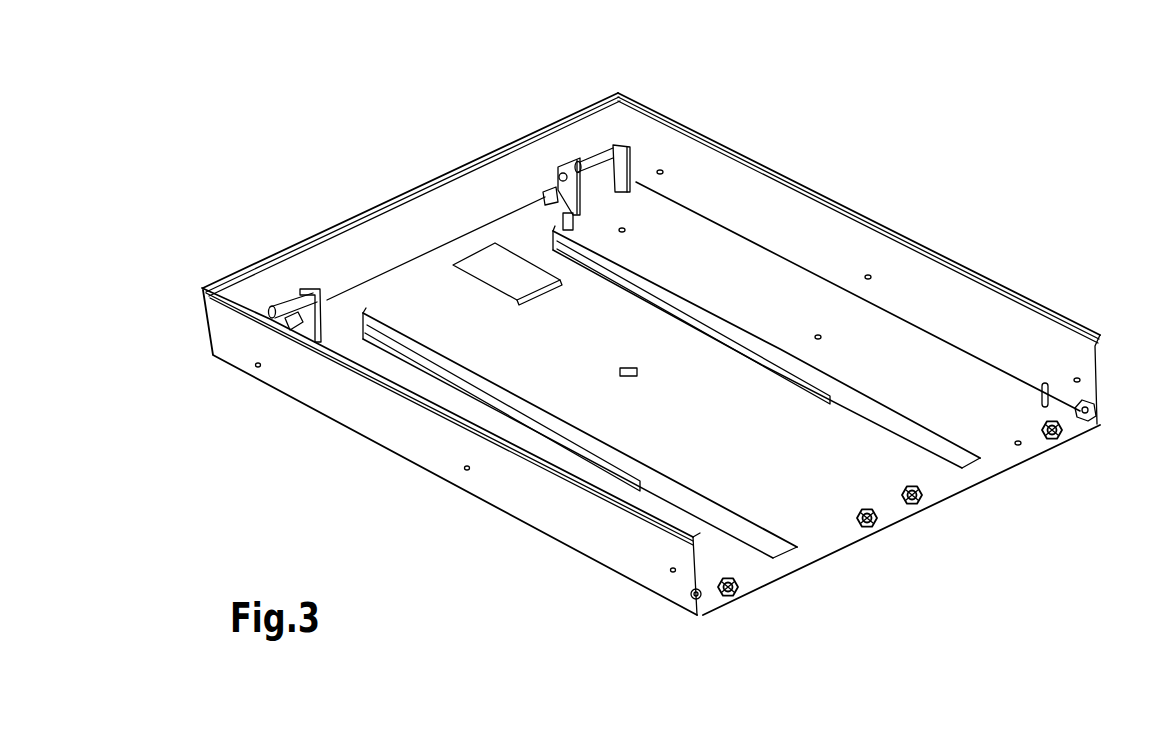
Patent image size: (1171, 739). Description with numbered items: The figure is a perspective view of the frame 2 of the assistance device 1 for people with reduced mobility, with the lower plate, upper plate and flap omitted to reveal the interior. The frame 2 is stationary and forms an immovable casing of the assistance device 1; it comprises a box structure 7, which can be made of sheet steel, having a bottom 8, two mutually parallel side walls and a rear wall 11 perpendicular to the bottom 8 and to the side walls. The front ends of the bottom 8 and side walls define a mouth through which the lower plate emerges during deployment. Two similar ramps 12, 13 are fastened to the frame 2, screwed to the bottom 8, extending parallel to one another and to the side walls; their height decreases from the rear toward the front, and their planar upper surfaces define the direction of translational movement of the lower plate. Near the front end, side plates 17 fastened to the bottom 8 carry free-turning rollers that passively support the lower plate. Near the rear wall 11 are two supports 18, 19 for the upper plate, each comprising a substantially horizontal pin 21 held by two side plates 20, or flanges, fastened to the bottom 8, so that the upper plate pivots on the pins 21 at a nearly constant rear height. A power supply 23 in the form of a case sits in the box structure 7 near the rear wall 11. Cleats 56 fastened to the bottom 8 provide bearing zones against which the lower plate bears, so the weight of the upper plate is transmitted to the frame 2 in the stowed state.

The assistance device 1 is at (320, 152).
The frame 2 is at (355, 410).
The box structure 7 is at (590, 530).
The bottom 8 is at (707, 357).
The rear wall 11 is at (420, 220).
The ramp 12 is at (510, 397).
The ramp 13 is at (670, 290).
The side plates 17 is at (743, 583).
The support 18 is at (290, 284).
The support 19 is at (602, 135).
The side plates 20 is at (312, 330).
The pin 21 is at (287, 307).
The power supply 23 is at (507, 273).
The cleats 56 is at (703, 597).